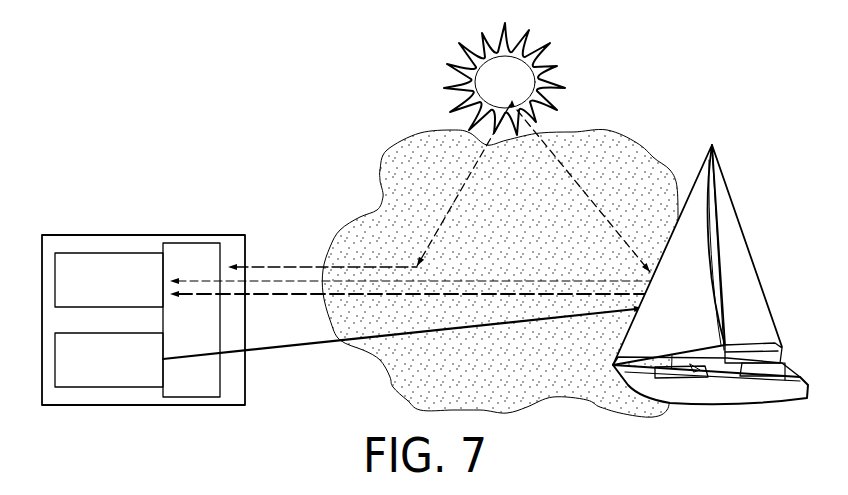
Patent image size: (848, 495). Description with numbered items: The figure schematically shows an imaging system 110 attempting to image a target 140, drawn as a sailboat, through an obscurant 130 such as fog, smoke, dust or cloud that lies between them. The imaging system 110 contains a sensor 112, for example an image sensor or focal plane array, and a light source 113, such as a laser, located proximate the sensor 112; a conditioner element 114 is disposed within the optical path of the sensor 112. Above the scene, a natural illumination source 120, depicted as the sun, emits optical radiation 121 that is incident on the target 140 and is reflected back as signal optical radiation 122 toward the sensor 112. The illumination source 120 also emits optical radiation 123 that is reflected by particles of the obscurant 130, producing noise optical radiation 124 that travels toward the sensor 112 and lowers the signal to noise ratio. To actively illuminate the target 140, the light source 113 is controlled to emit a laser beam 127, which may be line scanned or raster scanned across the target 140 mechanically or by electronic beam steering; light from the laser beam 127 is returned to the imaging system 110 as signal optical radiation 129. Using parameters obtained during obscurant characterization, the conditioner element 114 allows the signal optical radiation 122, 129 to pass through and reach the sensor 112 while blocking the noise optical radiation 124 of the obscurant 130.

The imaging system 110 is at (143, 257).
The sensor 112 is at (130, 296).
The light source 113 is at (130, 376).
The conditioner element 114 is at (190, 253).
The illumination source 120 is at (580, 91).
The optical radiation 121 is at (587, 200).
The signal optical radiation 122 is at (503, 279).
The optical radiation 123 is at (477, 161).
The noise optical radiation 124 is at (298, 265).
The laser beam 127 is at (457, 328).
The signal optical radiation 129 is at (347, 296).
The obscurant 130 is at (351, 182).
The target 140 is at (764, 206).